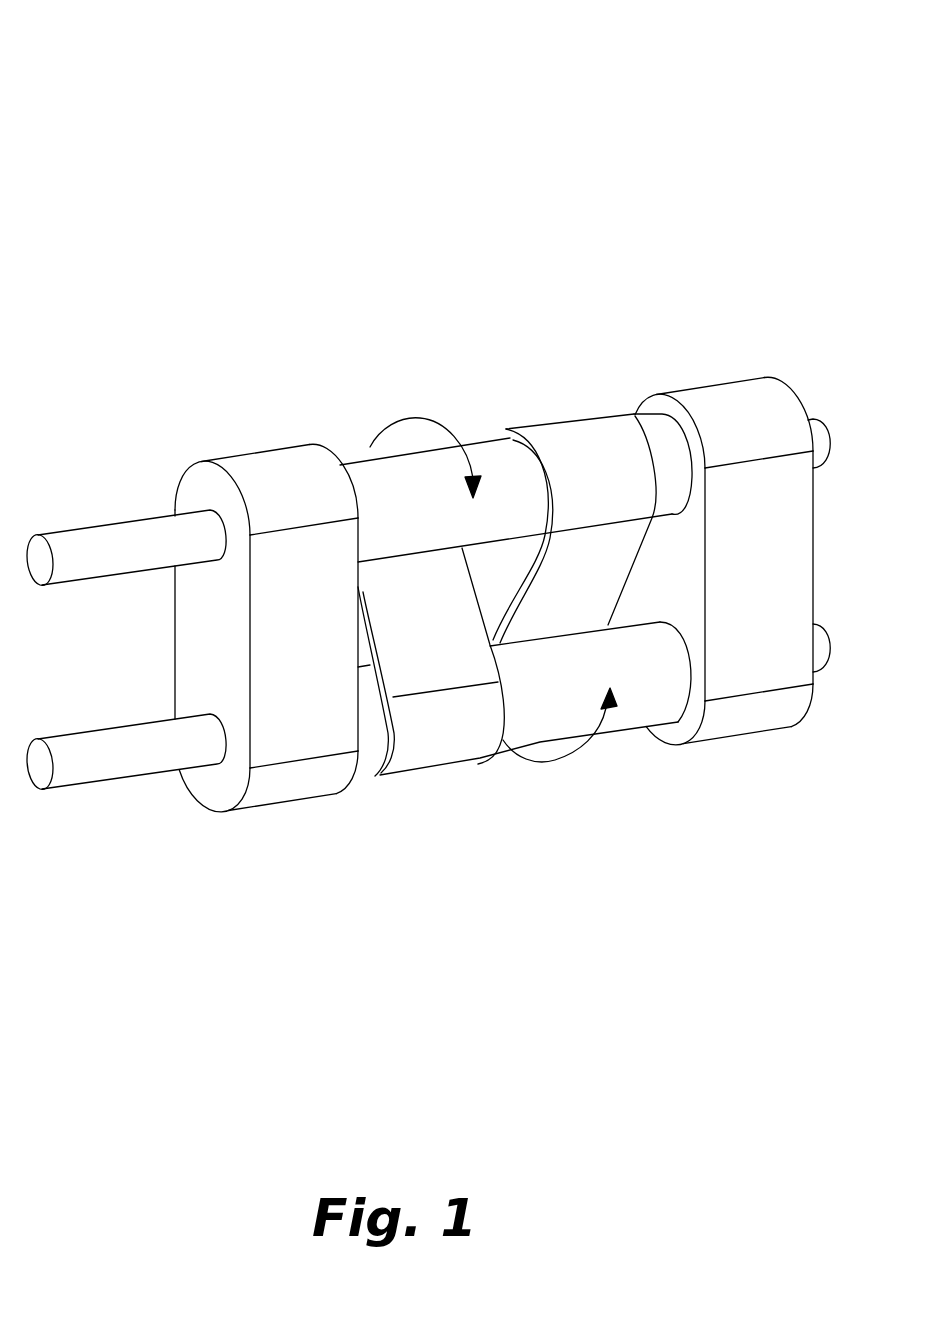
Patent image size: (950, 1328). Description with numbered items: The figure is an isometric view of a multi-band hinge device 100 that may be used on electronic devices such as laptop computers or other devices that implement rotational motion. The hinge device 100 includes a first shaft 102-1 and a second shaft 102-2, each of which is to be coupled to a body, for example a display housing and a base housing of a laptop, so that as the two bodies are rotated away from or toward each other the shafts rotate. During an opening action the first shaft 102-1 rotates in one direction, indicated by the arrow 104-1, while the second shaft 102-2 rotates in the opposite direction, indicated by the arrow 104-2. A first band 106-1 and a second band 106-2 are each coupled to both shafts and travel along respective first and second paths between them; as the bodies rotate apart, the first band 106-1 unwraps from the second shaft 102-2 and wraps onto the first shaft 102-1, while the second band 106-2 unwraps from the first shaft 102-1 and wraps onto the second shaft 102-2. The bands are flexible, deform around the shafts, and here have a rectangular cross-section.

The multi-band hinge device 100 is at (158, 88).
The first shaft 102-1 is at (485, 455).
The second shaft 102-2 is at (667, 708).
The arrow 104-1 is at (401, 418).
The arrow 104-2 is at (562, 763).
The first band 106-1 is at (458, 723).
The second band 106-2 is at (612, 445).